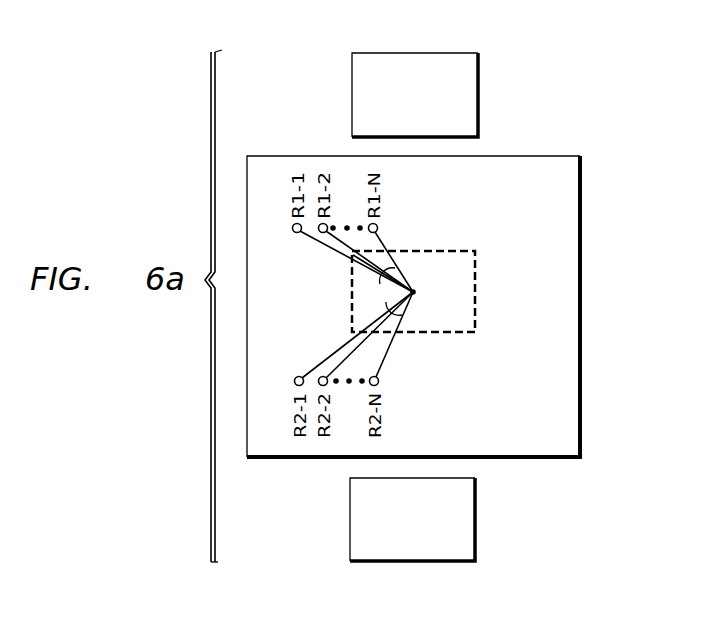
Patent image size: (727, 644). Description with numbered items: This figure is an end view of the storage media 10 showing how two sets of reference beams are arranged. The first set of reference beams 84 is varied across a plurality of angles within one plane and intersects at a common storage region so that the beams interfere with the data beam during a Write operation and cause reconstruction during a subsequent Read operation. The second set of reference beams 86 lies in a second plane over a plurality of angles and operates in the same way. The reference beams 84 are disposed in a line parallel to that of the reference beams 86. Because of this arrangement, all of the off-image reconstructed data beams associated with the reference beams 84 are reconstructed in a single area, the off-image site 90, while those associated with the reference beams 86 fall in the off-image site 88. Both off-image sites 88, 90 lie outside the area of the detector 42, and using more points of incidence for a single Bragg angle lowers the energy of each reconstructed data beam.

The storage media 10 is at (563, 237).
The detector 42 is at (470, 274).
The reference beams 84 is at (392, 270).
The reference beams 86 is at (390, 306).
The off-image site 88 is at (478, 88).
The off-image site 90 is at (475, 528).